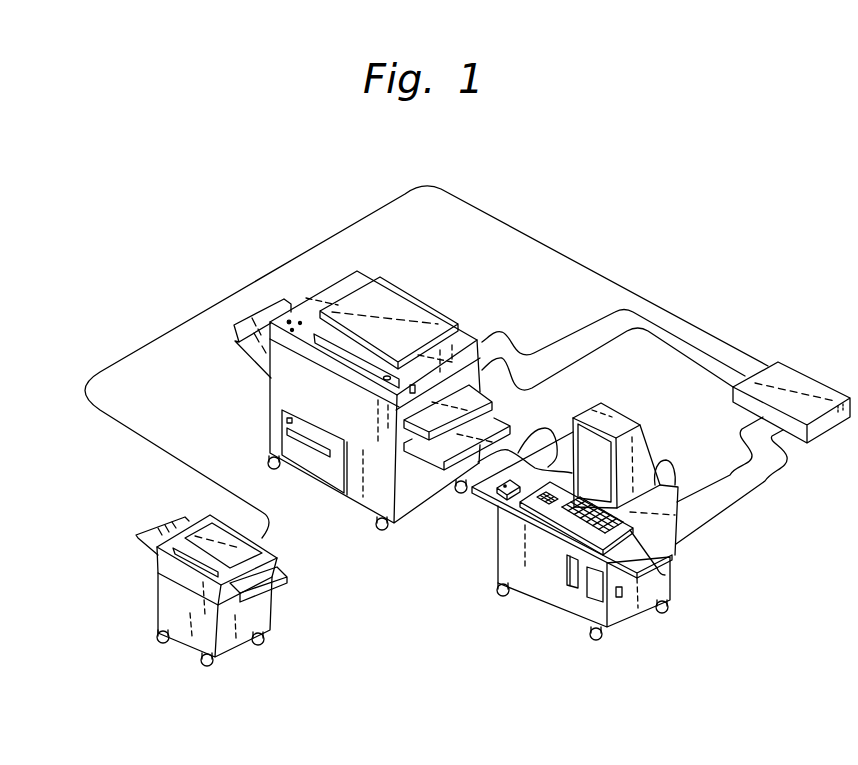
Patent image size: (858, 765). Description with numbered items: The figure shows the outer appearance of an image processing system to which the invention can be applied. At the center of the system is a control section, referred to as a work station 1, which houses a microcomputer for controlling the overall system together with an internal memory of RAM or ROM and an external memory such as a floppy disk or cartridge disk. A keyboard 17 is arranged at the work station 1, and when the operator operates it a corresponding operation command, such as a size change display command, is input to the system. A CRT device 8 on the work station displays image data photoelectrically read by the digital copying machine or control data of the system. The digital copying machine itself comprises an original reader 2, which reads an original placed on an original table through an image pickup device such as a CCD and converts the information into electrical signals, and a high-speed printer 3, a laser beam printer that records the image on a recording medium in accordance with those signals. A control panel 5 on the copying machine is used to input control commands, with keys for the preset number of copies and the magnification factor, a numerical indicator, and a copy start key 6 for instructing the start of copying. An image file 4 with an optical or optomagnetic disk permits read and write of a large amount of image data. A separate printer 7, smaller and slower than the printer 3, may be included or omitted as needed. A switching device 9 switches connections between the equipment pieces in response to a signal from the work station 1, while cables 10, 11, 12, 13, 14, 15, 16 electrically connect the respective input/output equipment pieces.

The control section 1 is at (587, 509).
The original reader 2 is at (363, 281).
The high-speed printer 3 is at (362, 383).
The image file 4 is at (332, 472).
The control panel 5 is at (344, 356).
The copy start key 6 is at (388, 381).
The printer 7 is at (158, 619).
The CRT device 8 is at (603, 445).
The switching device 9 is at (806, 385).
The cable 10 is at (592, 269).
The cable 11 is at (573, 336).
The cable 12 is at (594, 345).
The cable 13 is at (720, 480).
The cable 14 is at (753, 490).
The cable 15 is at (541, 428).
The cable 16 is at (669, 462).
The keyboard 17 is at (665, 575).